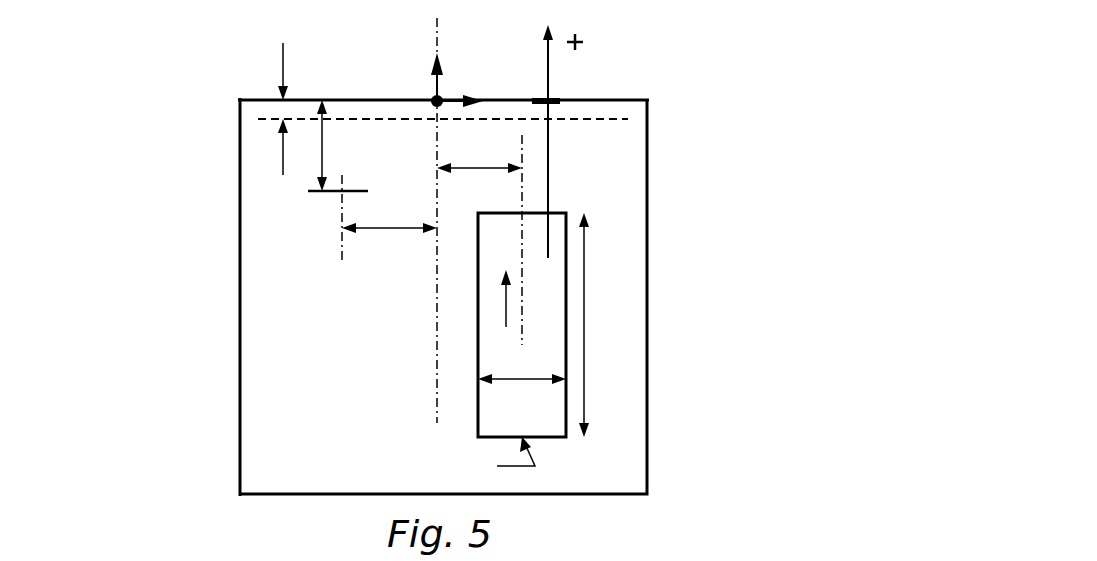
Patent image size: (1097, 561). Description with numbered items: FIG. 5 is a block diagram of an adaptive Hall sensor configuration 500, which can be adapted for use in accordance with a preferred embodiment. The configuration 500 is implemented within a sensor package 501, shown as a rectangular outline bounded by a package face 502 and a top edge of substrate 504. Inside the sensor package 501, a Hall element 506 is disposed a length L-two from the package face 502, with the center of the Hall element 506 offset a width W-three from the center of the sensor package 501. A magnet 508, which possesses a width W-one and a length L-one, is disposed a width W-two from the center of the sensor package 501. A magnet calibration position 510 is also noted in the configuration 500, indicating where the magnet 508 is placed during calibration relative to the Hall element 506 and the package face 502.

The adaptive Hall sensor configuration 500 is at (144, 401).
The sensor package 501 is at (312, 447).
The package face 502 is at (240, 156).
The top edge of substrate 504 is at (258, 110).
The Hall element 506 is at (333, 193).
The magnet 508 is at (544, 425).
The magnet calibration position 510 is at (556, 101).